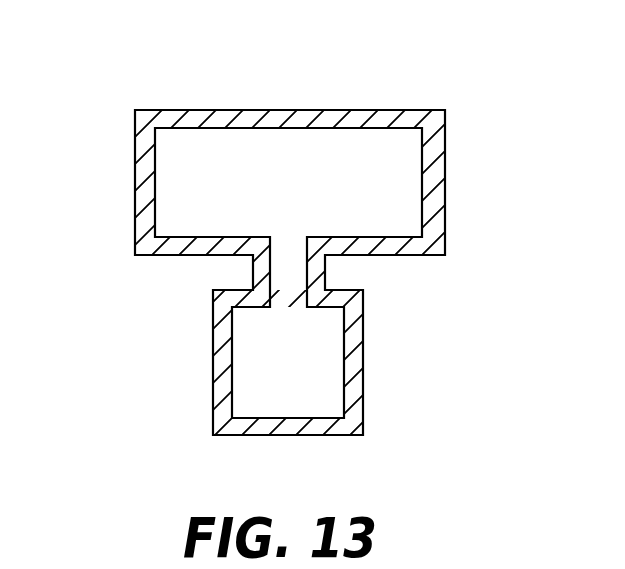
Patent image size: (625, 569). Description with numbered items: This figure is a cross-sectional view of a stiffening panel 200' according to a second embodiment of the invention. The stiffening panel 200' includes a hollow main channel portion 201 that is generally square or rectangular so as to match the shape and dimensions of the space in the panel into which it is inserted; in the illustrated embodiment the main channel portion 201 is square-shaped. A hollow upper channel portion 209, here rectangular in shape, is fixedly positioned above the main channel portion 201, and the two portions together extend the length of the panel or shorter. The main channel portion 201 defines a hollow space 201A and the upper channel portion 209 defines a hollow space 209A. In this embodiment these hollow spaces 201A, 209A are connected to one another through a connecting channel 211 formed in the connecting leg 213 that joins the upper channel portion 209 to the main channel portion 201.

The stiffening panel 200' is at (312, 284).
The upper channel portion 209 is at (428, 173).
The hollow space 209A is at (205, 179).
The connecting channel 211 is at (287, 263).
The connecting leg 213 is at (325, 265).
The main channel portion 201 is at (357, 360).
The hollow space 201A is at (257, 352).